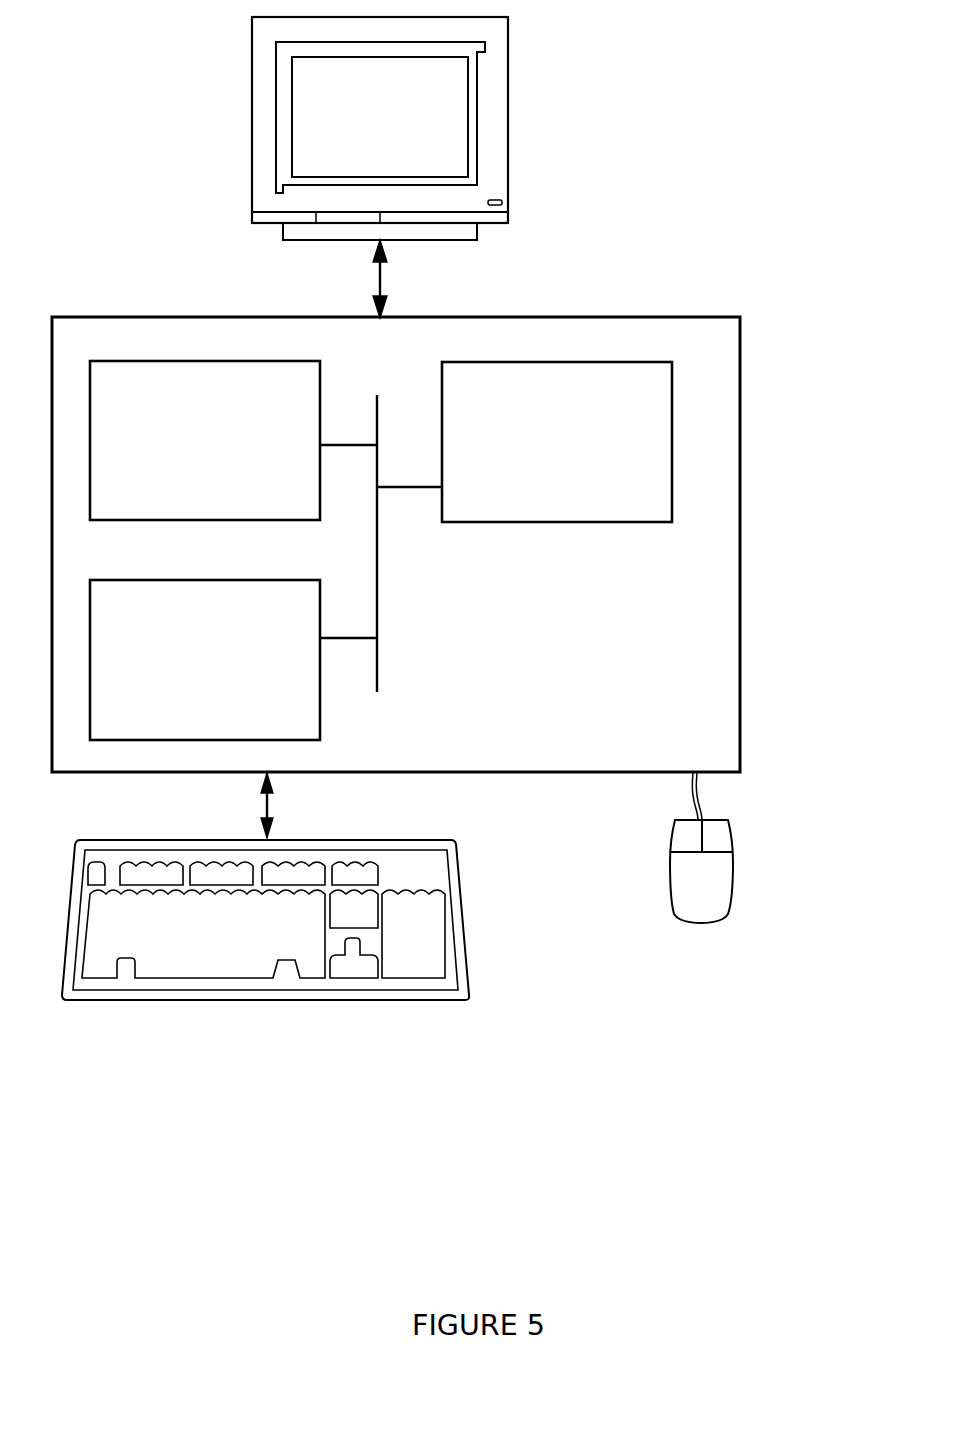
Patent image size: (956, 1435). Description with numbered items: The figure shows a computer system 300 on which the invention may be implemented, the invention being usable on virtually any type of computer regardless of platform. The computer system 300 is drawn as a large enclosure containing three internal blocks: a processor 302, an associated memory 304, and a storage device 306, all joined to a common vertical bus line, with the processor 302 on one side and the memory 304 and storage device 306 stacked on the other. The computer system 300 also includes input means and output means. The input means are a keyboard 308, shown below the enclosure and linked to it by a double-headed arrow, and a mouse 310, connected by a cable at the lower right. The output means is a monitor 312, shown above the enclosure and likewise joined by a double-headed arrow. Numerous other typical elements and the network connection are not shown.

The computer system 300 is at (760, 172).
The processor 302 is at (553, 452).
The memory 304 is at (185, 451).
The storage device 306 is at (181, 672).
The keyboard 308 is at (175, 957).
The mouse 310 is at (680, 894).
The monitor 312 is at (357, 132).